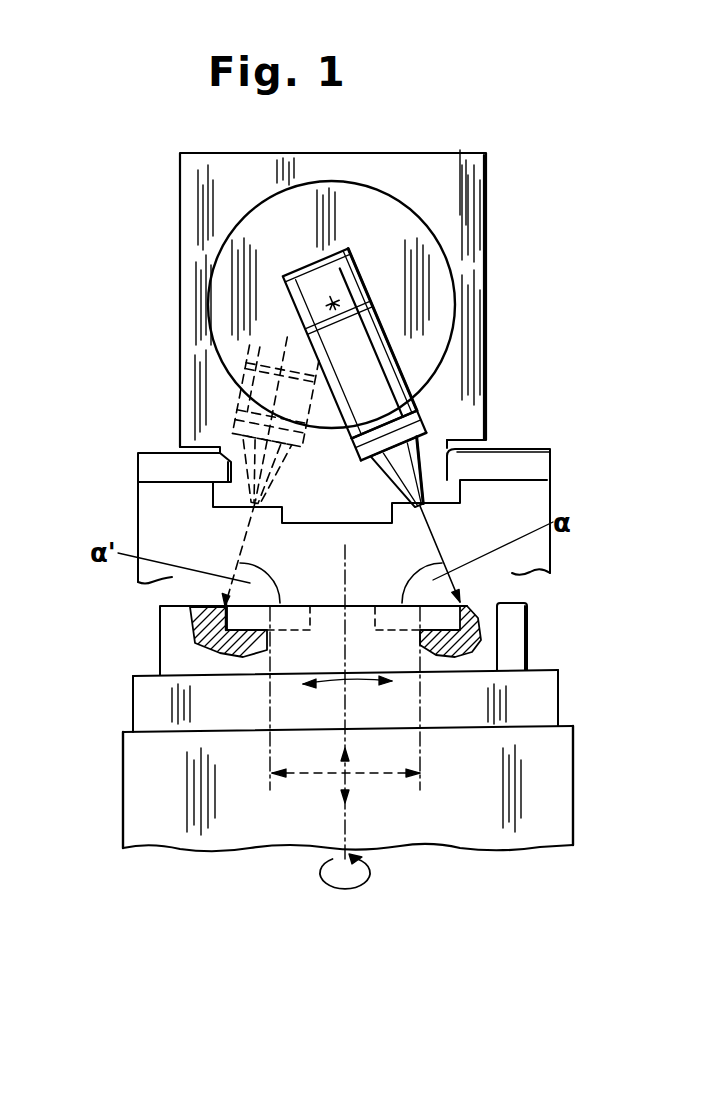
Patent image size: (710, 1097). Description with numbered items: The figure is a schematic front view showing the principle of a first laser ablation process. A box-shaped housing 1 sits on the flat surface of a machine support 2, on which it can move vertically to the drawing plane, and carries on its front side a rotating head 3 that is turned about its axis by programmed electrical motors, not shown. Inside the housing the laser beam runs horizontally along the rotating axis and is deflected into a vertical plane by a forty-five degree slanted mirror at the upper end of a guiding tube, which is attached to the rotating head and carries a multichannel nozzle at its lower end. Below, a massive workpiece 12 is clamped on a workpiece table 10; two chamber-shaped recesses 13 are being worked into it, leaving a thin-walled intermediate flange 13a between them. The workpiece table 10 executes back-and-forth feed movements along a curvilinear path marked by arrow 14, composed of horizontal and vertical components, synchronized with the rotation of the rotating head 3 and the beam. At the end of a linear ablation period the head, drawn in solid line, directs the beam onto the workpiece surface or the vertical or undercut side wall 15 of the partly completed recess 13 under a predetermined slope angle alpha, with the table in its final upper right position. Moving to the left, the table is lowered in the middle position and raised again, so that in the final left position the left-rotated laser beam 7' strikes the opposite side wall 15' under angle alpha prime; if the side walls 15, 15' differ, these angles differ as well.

The box-shaped housing 1 is at (463, 187).
The machine support 2 is at (517, 507).
The rotating head 3 is at (440, 272).
The laser beam in final left position 7' is at (223, 418).
The workpiece table 10 is at (553, 742).
The workpiece 12 is at (510, 650).
The chamber-shaped recess 13 is at (480, 633).
The intermediate flange 13a is at (468, 617).
The arrow 14 is at (343, 690).
The side wall 15 is at (515, 554).
The side wall 15' is at (162, 567).